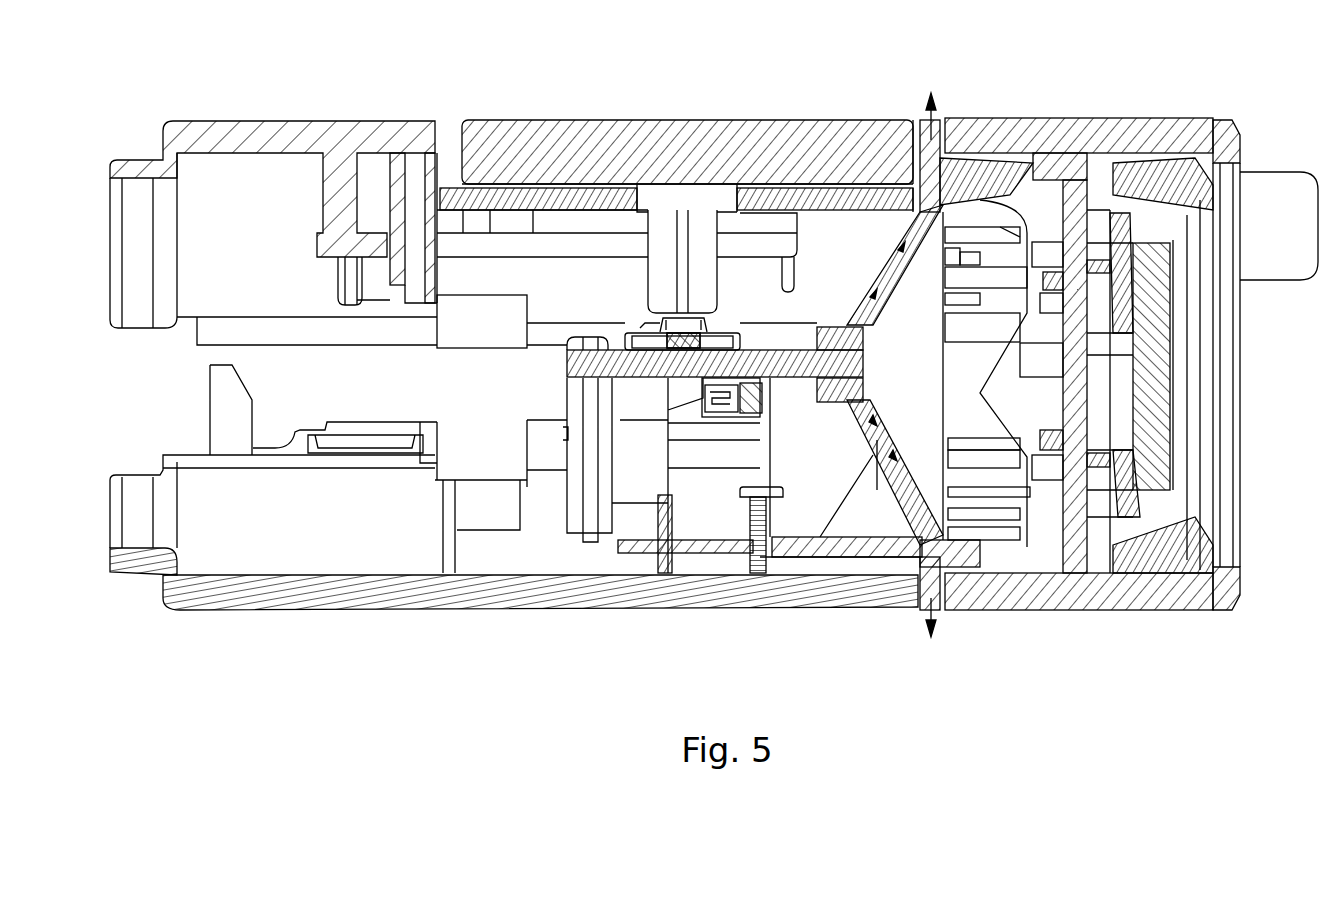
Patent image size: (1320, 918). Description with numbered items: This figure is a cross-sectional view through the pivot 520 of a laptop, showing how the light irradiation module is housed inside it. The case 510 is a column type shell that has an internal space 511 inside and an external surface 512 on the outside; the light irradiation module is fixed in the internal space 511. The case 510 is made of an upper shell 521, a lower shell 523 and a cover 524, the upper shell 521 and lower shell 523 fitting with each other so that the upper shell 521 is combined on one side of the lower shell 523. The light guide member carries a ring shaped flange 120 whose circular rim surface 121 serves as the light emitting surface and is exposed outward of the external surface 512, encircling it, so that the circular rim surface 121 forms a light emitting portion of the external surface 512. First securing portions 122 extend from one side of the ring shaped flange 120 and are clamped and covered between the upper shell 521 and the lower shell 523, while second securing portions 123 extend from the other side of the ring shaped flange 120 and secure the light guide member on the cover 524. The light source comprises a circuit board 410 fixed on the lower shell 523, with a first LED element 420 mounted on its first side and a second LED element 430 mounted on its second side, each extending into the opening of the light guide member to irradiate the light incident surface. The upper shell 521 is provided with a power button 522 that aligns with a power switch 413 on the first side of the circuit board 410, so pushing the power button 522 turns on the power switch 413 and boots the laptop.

The pivot 520 is at (1210, 52).
The upper shell 521 is at (212, 120).
The power button 522 is at (727, 150).
The lower shell 523 is at (360, 595).
The cover 524 is at (1145, 605).
The case 510 is at (585, 626).
The internal space 511 is at (572, 283).
The external surface 512 is at (987, 115).
The ring shaped flange 120 is at (913, 118).
The circular rim surface 121 is at (945, 112).
The first securing portions 122 is at (819, 585).
The second securing portions 123 is at (1001, 220).
The circuit board 410 is at (566, 360).
The power switch 413 is at (712, 330).
The first LED element 420 is at (827, 338).
The second LED element 430 is at (823, 388).